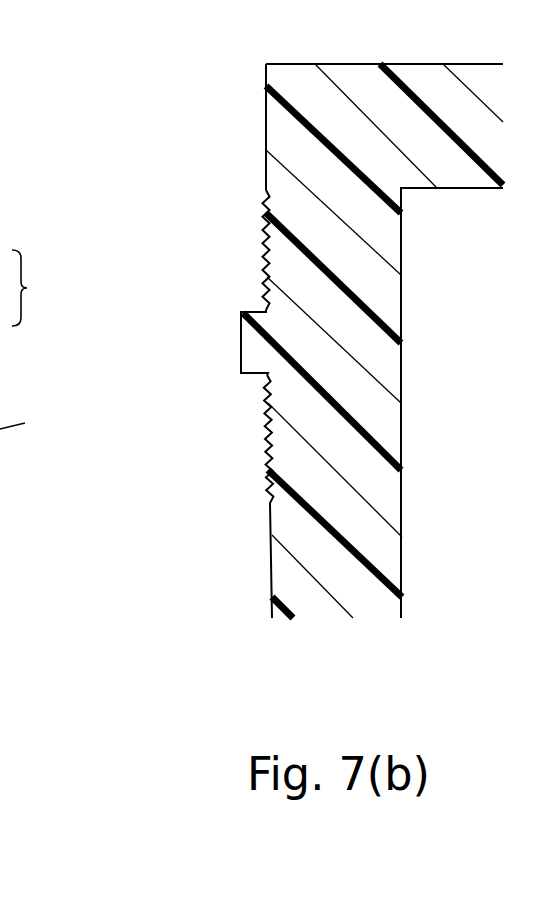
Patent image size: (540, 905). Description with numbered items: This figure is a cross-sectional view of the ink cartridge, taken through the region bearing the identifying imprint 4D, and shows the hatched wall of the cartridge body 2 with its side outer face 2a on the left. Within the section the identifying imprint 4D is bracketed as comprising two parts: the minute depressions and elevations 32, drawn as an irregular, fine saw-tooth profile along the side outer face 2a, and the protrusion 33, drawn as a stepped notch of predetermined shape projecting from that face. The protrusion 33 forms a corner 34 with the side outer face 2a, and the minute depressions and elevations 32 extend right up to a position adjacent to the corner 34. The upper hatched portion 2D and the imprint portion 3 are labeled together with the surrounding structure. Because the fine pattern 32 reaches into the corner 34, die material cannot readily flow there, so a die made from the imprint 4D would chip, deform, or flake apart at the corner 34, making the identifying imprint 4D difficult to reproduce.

The body 2 is at (251, 341).
The member 2D is at (279, 125).
The side outer face 2a is at (267, 170).
The threaded portion 3 is at (136, 404).
The identifying imprint 4D is at (84, 250).
The minute depressions and elevations 32 is at (265, 270).
The protrusion 33 is at (252, 342).
The corner 34 is at (263, 376).